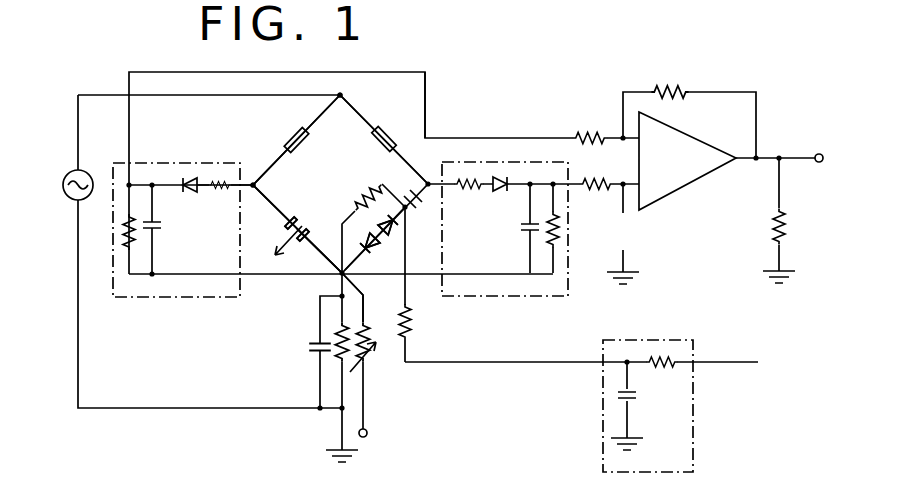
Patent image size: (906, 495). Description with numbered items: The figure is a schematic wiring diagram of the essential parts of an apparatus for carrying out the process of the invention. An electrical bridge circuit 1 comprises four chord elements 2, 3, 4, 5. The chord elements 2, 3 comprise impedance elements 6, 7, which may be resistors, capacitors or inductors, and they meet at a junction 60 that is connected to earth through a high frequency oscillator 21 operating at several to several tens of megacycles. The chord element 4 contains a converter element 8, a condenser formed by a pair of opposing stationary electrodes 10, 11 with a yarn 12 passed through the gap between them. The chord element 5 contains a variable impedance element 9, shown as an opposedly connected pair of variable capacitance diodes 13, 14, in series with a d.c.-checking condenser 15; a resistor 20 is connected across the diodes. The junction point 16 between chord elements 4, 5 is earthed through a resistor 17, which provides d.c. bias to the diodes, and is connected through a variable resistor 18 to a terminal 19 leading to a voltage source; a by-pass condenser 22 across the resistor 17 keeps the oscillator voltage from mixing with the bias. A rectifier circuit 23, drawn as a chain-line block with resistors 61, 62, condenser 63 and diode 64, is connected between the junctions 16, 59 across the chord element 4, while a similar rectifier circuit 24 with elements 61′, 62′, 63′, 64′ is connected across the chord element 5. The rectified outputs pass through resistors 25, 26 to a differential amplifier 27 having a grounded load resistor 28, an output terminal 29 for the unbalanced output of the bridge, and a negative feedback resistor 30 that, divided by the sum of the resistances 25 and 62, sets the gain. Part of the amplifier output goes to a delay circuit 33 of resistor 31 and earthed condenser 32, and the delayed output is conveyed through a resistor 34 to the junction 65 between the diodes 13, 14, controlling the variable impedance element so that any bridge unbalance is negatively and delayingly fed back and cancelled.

The electrical bridge circuit 1 is at (365, 97).
The chord element 2 is at (296, 140).
The chord element 3 is at (368, 123).
The chord element 4 is at (274, 208).
The chord element 5 is at (417, 188).
The impedance element 6 is at (303, 130).
The impedance element 7 is at (392, 134).
The converter element 8 is at (293, 316).
The variable impedance element 9 is at (470, 307).
The stationary electrode 10 is at (284, 232).
The stationary electrode 11 is at (304, 244).
The yarn 12 is at (306, 222).
The variable capacitance diode 13 is at (394, 226).
The variable capacitance diode 14 is at (380, 247).
The d.c.-checking condenser 15 is at (425, 134).
The junction point 16 is at (356, 288).
The resistor 17 is at (347, 366).
The variable resistor 18 is at (372, 360).
The terminal 19 is at (370, 437).
The resistor 20 is at (368, 196).
The high frequency oscillator 21 is at (67, 172).
The by-pass condenser 22 is at (310, 350).
The rectifier circuit 23 is at (209, 155).
The rectifier circuit 24 is at (518, 153).
The resistor 25 is at (597, 131).
The resistor 26 is at (592, 177).
The differential amplifier 27 is at (692, 135).
The load resistor 28 is at (784, 226).
The terminal 29 is at (820, 153).
The resistor 30 is at (665, 87).
The resistor 31 is at (662, 355).
The condenser 32 is at (637, 397).
The delay circuit 33 is at (702, 450).
The resistor 34 is at (406, 322).
The junction 59 is at (251, 178).
The junction 60 is at (342, 95).
The resistor 61 is at (230, 190).
The resistor 62 is at (133, 262).
The condenser 63 is at (160, 228).
The diode 64 is at (189, 177).
The junction 65 is at (394, 230).
The resistor 61′ is at (466, 190).
The resistor 62′ is at (558, 232).
The condenser 63′ is at (522, 232).
The diode 64′ is at (508, 180).